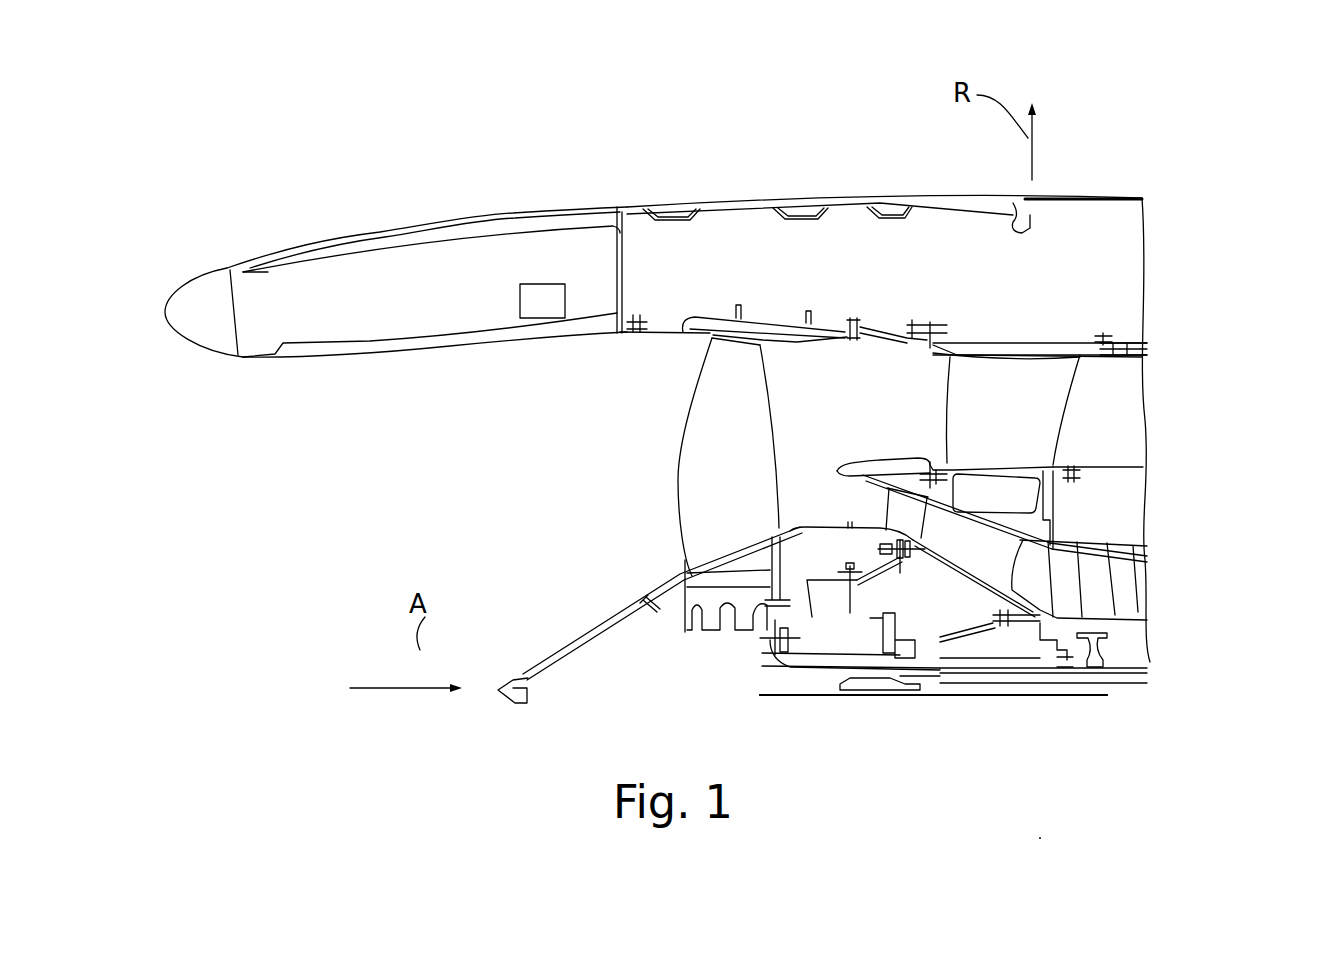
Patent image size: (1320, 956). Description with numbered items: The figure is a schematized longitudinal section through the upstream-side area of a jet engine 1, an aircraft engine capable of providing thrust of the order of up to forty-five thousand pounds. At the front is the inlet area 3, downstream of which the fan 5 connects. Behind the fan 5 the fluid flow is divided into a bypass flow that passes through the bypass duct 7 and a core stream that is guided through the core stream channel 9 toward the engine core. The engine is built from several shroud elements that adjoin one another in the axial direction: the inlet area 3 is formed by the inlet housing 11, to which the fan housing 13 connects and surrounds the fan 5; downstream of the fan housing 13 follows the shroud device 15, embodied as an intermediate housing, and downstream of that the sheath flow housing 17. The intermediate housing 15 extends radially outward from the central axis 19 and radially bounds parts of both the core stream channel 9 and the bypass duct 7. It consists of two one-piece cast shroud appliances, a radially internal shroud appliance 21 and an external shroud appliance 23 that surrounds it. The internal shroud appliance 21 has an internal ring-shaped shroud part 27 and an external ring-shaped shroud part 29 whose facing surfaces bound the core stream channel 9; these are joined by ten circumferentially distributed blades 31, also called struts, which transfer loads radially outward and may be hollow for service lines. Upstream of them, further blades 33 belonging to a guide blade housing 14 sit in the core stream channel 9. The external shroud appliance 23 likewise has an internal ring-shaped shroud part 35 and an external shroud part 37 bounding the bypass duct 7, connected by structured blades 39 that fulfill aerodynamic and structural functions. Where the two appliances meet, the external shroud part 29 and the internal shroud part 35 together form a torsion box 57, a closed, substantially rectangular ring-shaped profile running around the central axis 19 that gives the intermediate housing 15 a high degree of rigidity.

The jet engine 1 is at (270, 186).
The inlet area 3 is at (404, 413).
The fan 5 is at (680, 446).
The bypass duct 7 is at (892, 398).
The core stream channel 9 is at (916, 528).
The inlet housing 11 is at (431, 216).
The fan housing 13 is at (739, 282).
The guide blade housing 14 is at (856, 460).
The shroud device 15 is at (1058, 290).
The sheath flow housing 17 is at (1147, 343).
The central axis 19 is at (1062, 698).
The internal shroud appliance 21 is at (1030, 581).
The external shroud appliance 23 is at (1080, 398).
The internal ring-shaped shroud part 27 is at (993, 590).
The external ring-shaped shroud part 29 is at (918, 540).
The blades 31 is at (967, 550).
The further blades 33 is at (857, 512).
The internal ring-shaped shroud part 35 is at (1020, 475).
The external shroud part 37 is at (1050, 347).
The structured blades 39 is at (967, 418).
The torsion box 57 is at (1018, 511).